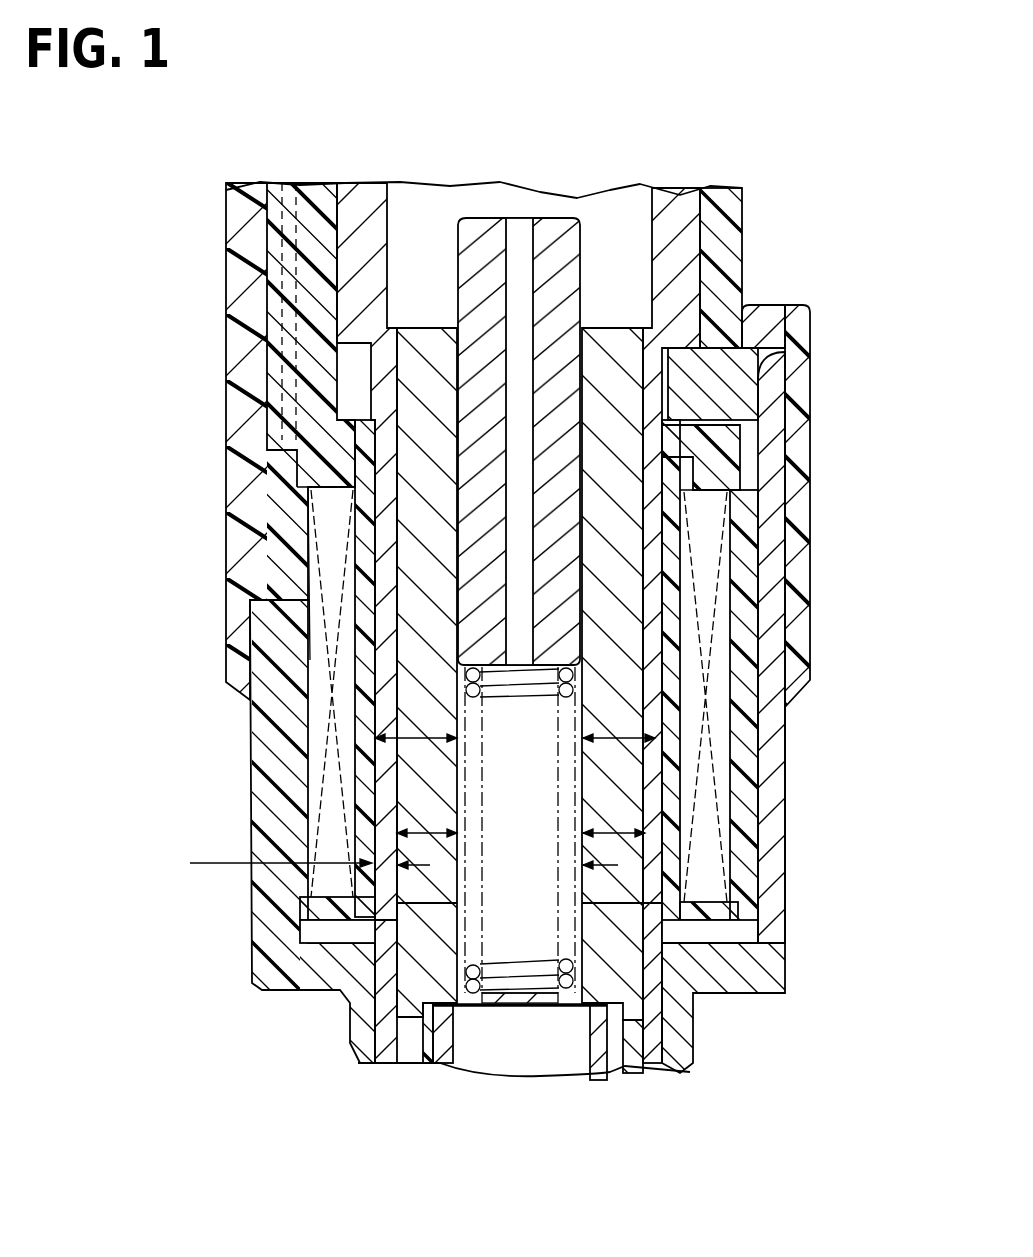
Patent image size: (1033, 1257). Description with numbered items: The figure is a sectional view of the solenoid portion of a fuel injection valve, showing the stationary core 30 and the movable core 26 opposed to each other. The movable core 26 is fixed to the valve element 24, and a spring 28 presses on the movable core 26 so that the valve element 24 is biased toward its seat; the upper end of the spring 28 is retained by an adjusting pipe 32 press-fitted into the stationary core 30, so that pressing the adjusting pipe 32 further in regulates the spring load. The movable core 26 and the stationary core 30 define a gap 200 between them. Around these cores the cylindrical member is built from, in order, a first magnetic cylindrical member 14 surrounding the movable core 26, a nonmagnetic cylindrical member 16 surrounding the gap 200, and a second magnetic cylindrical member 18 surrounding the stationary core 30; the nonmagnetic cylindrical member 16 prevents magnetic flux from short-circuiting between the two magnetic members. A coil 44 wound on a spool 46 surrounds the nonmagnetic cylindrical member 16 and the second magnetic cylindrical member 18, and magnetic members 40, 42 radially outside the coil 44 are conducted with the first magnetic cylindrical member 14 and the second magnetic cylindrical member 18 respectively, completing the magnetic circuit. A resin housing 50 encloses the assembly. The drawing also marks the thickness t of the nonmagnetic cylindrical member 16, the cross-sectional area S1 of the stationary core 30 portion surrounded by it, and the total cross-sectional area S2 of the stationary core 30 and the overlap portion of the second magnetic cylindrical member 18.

The first magnetic cylindrical member 14 is at (660, 1018).
The nonmagnetic cylindrical member 16 is at (768, 872).
The second magnetic cylindrical member 18 is at (745, 532).
The valve element 24 is at (600, 1077).
The movable core 26 is at (632, 1013).
The spring 28 is at (583, 698).
The stationary core 30 is at (610, 330).
The adjusting pipe 32 is at (483, 228).
The magnetic member 40 is at (770, 968).
The magnetic member 42 is at (723, 360).
The coil 44 is at (312, 545).
The spool 46 is at (366, 578).
The resin housing 50 is at (226, 243).
The gap 200 is at (757, 948).
The cross-sectional area S1 is at (592, 840).
The total cross-sectional area S2 is at (592, 748).
The thickness t is at (281, 846).